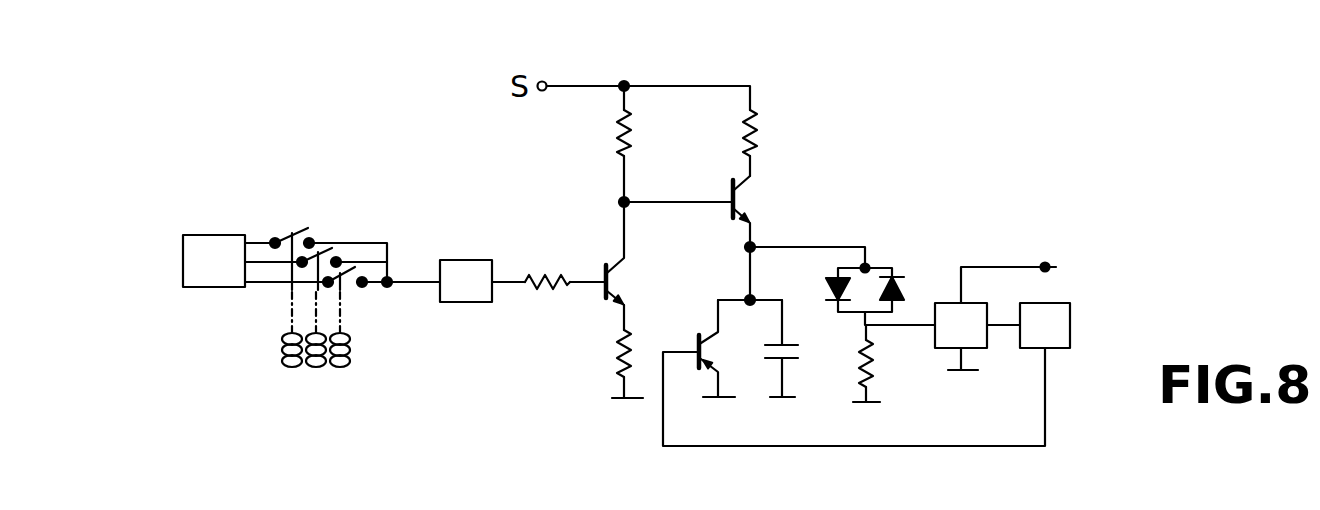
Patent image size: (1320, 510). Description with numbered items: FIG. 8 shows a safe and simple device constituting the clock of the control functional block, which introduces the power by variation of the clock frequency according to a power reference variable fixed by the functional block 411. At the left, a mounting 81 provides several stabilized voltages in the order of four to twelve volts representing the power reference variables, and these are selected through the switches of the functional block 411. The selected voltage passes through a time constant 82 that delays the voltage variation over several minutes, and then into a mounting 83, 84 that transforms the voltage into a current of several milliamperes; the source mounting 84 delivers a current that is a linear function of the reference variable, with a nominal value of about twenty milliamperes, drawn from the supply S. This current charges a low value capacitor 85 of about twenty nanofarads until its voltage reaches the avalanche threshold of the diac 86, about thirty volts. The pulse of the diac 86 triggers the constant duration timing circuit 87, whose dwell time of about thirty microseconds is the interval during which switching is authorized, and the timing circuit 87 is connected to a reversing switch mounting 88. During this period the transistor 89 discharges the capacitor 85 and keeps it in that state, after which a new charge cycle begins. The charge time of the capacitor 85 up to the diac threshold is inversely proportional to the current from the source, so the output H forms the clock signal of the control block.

The mounting providing several stabilized voltages 81 is at (255, 261).
The time constant 82 is at (466, 281).
The mounting transforming voltage into current 83 is at (620, 283).
The source mounting of a current 84 is at (737, 197).
The low value capacitor 85 is at (790, 345).
The diac 86 is at (912, 252).
The constant duration timing circuit 87 is at (1010, 309).
The reversing switch mounting 88 is at (1028, 325).
The transistor 89 is at (706, 345).
The functional block fixing the power reference variable 411 is at (355, 383).